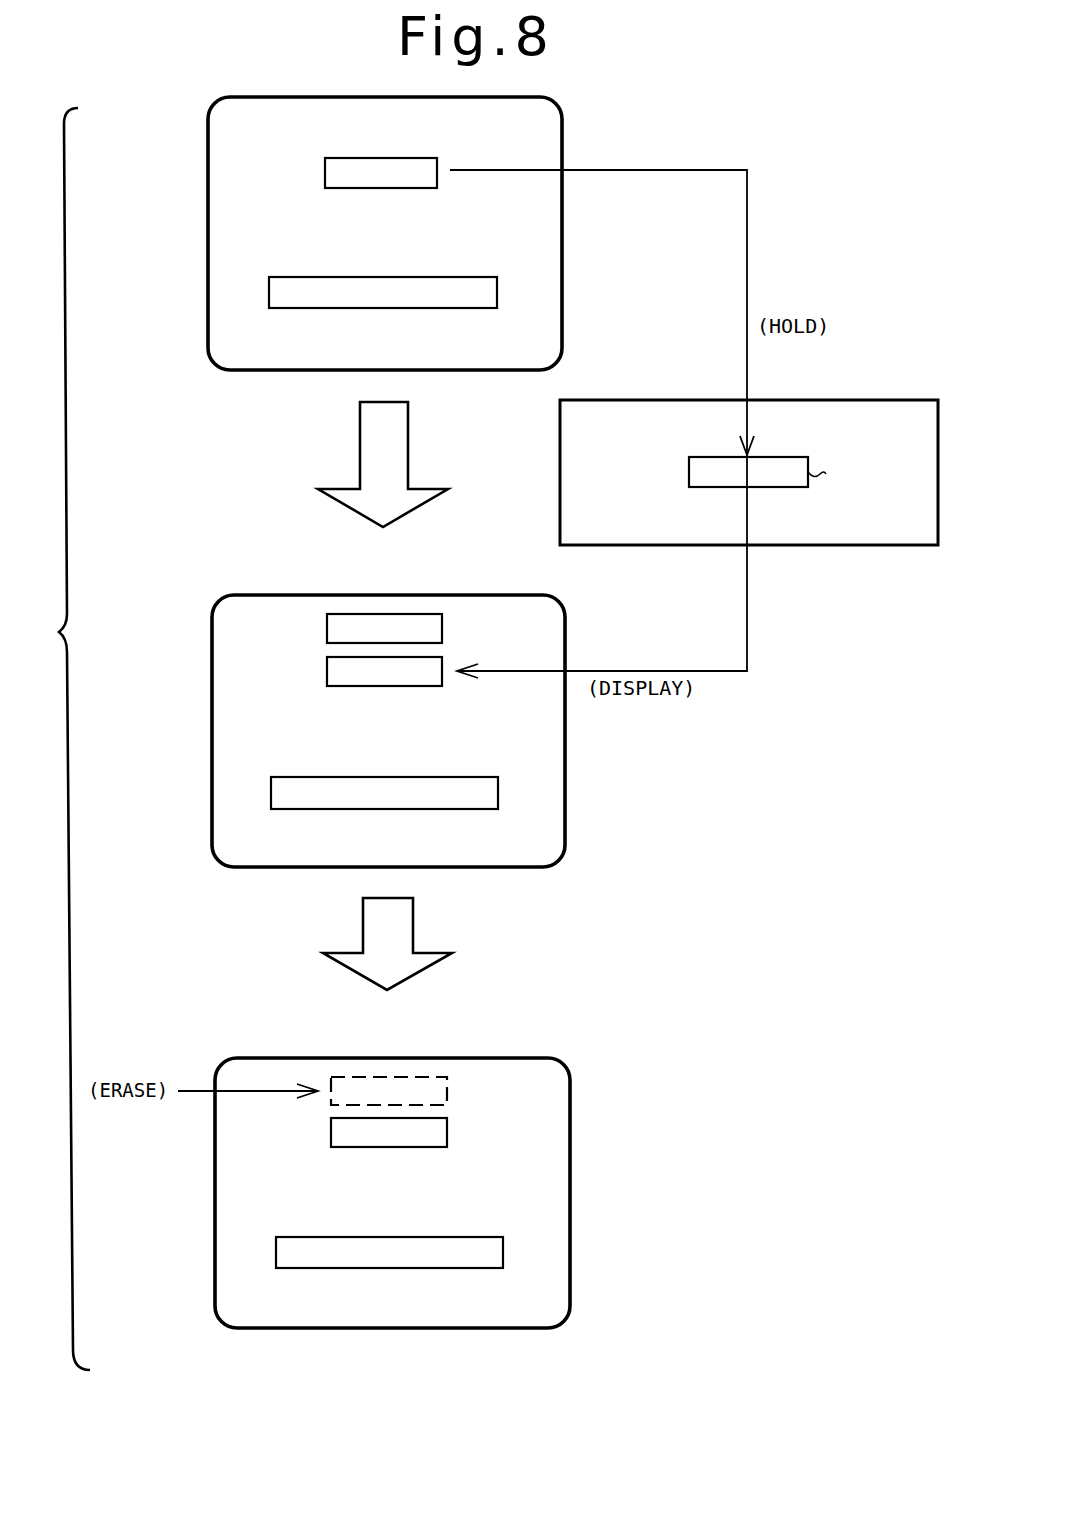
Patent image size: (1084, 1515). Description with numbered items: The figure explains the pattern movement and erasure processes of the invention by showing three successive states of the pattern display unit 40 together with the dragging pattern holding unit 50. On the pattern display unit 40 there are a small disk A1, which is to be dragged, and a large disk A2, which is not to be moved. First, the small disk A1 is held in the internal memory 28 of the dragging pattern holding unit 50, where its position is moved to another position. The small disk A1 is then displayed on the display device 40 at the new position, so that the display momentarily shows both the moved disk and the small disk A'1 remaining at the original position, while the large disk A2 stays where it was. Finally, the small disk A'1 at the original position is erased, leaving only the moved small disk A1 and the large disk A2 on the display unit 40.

The pattern display unit 40 is at (562, 121).
The dragging pattern holding unit 50 is at (889, 400).
The internal memory 28 is at (795, 457).
The small disk A1 is at (418, 162).
The large disk A2 is at (468, 285).
The small disk at the original position A'1 is at (397, 859).